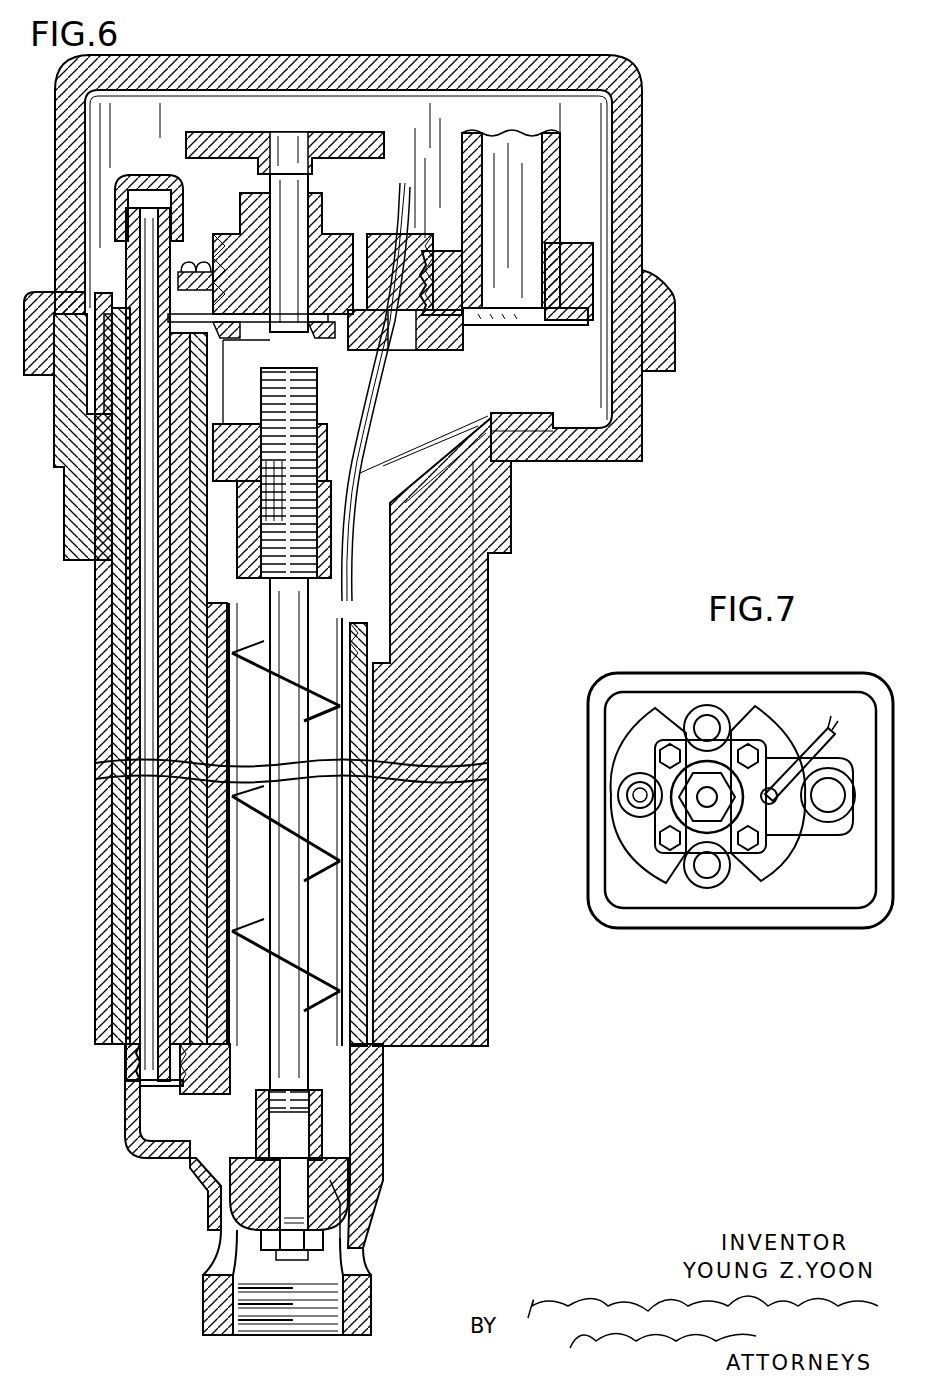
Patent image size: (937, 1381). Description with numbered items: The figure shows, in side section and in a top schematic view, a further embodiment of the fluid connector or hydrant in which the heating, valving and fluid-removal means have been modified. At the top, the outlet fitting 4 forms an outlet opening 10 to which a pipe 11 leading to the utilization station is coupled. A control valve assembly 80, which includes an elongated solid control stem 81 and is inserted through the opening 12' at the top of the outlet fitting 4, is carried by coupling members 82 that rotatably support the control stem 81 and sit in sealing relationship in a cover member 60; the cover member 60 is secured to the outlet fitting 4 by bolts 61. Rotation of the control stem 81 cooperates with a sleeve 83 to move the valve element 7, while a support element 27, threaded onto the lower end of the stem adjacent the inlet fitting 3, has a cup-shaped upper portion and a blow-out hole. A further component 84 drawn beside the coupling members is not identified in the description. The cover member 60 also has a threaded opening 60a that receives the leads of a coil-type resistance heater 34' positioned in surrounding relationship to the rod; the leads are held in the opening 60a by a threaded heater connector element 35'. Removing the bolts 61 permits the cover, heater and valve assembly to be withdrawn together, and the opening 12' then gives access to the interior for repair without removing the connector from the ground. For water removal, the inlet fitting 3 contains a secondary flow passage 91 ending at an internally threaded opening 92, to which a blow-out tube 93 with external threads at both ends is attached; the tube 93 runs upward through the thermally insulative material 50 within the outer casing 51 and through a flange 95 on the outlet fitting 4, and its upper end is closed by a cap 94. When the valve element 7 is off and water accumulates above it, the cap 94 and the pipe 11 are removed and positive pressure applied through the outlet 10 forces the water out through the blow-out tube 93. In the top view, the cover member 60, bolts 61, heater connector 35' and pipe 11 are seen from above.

In FIG. 6, the inlet fitting 3 is at (352, 1273).
In FIG. 6, the outlet fitting 4 is at (502, 456).
In FIG. 6, the valve element 7 is at (330, 1192).
In FIG. 6, the outlet opening 10 is at (606, 268).
In FIG. 6, the pipe 11 is at (530, 190).
In FIG. 7, the pipe 11 is at (838, 785).
In FIG. 6, the opening 12' is at (272, 459).
In FIG. 6, the support element 27 is at (314, 1135).
In FIG. 6, the coil-type resistance element heater 34' is at (326, 824).
In FIG. 6, the heater connector element 35' is at (506, 275).
In FIG. 7, the heater connector element 35' is at (799, 802).
In FIG. 6, the thermally insulative material 50 is at (90, 680).
In FIG. 6, the outer casing 51 is at (90, 800).
In FIG. 6, the cover member 60 is at (162, 292).
In FIG. 7, the cover member 60 is at (650, 768).
In FIG. 6, the opening 60a is at (430, 315).
In FIG. 6, the bolts 61 is at (190, 254).
In FIG. 7, the bolts 61 is at (650, 828).
In FIG. 6, the control valve assembly 80 is at (304, 186).
In FIG. 6, the control stem 81 is at (294, 284).
In FIG. 6, the coupling members 82 is at (298, 685).
In FIG. 6, the sleeve 83 is at (336, 563).
In FIG. 6, the nut 84 is at (322, 250).
In FIG. 6, the secondary flow passage 91 is at (145, 1105).
In FIG. 6, the opening 92 is at (120, 1052).
In FIG. 6, the blow-out tube 93 is at (150, 860).
In FIG. 6, the cap 94 is at (144, 143).
In FIG. 6, the flange 95 is at (116, 360).